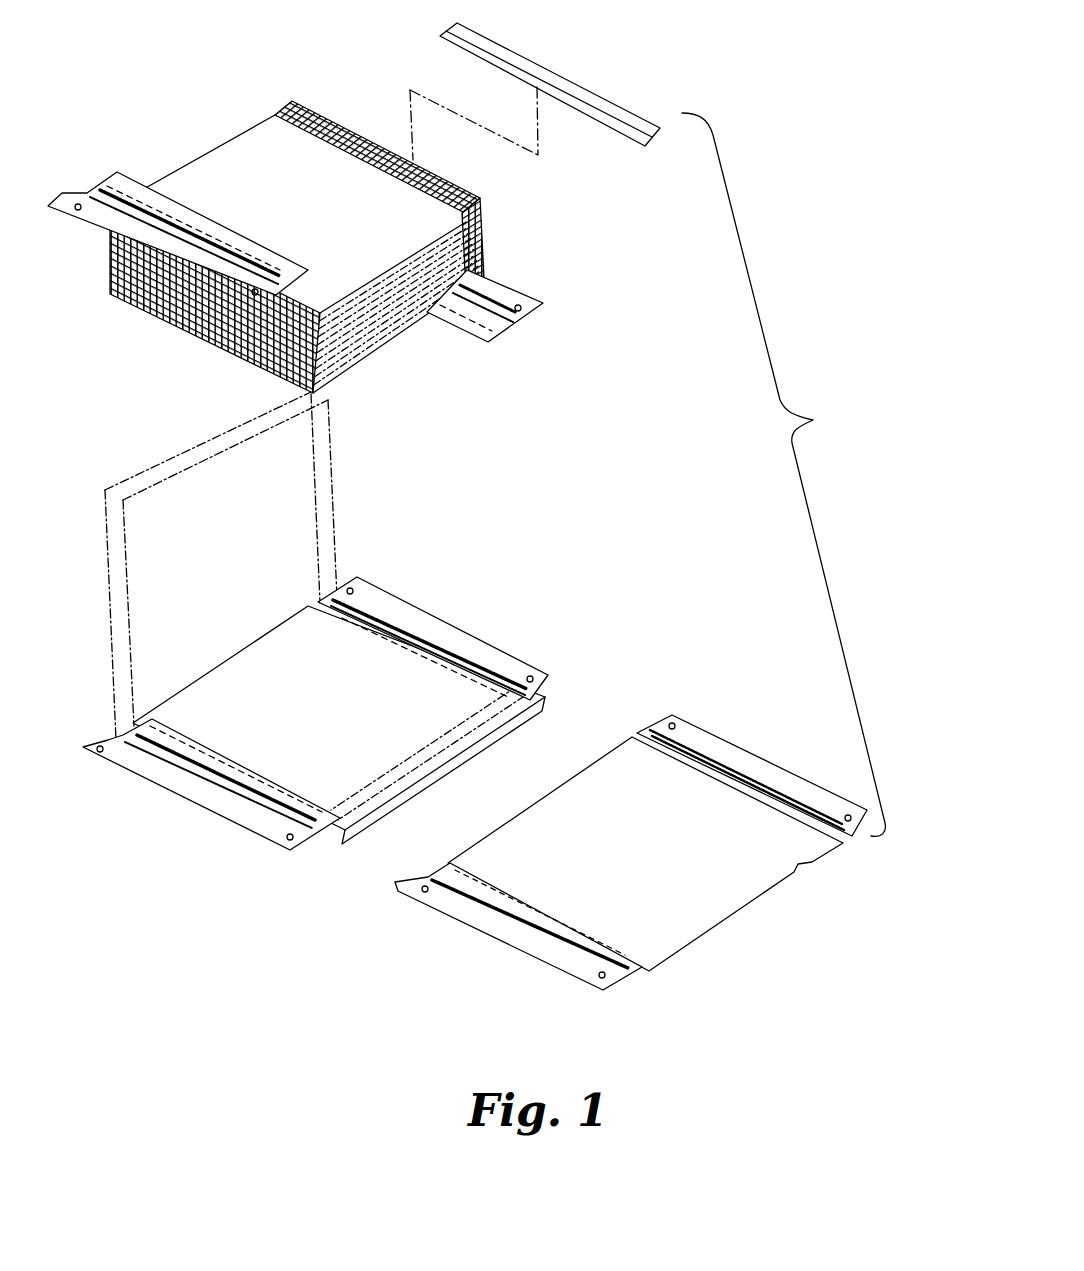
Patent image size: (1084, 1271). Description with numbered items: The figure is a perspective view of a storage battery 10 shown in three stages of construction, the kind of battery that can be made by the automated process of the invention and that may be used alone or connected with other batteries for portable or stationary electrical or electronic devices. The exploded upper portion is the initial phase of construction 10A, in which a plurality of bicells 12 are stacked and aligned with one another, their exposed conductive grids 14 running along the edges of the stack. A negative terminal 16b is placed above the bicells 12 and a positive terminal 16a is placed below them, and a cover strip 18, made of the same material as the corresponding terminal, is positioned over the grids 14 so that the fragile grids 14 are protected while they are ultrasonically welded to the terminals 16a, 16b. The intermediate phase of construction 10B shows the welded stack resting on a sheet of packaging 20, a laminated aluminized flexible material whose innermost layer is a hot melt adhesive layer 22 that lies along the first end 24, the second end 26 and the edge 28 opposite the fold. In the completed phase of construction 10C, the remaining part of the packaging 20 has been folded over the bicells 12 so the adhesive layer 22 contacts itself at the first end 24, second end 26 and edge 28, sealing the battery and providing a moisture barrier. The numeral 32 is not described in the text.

The storage battery 10 is at (392, 218).
The initial phase of construction 10A is at (392, 248).
The intermediate phase of construction 10B is at (380, 696).
The completed phase of construction 10C is at (645, 834).
The bicells 12 is at (370, 310).
The exposed conductive grids 14 is at (478, 195).
The positive terminal 16a is at (528, 306).
The negative terminal 16b is at (92, 212).
The cover strip 18 is at (598, 106).
The packaging 20 is at (207, 563).
The hot melt adhesive layer 22 is at (198, 428).
The first end 24 is at (620, 730).
The second end 26 is at (643, 975).
The edge opposite the packaging fold 28 is at (360, 838).
The carrier frame 32 is at (438, 771).